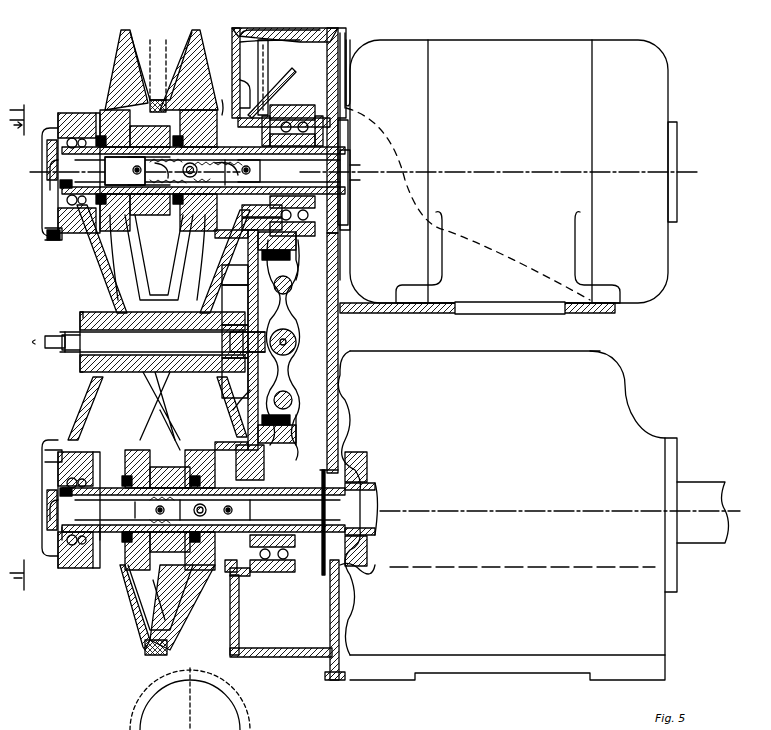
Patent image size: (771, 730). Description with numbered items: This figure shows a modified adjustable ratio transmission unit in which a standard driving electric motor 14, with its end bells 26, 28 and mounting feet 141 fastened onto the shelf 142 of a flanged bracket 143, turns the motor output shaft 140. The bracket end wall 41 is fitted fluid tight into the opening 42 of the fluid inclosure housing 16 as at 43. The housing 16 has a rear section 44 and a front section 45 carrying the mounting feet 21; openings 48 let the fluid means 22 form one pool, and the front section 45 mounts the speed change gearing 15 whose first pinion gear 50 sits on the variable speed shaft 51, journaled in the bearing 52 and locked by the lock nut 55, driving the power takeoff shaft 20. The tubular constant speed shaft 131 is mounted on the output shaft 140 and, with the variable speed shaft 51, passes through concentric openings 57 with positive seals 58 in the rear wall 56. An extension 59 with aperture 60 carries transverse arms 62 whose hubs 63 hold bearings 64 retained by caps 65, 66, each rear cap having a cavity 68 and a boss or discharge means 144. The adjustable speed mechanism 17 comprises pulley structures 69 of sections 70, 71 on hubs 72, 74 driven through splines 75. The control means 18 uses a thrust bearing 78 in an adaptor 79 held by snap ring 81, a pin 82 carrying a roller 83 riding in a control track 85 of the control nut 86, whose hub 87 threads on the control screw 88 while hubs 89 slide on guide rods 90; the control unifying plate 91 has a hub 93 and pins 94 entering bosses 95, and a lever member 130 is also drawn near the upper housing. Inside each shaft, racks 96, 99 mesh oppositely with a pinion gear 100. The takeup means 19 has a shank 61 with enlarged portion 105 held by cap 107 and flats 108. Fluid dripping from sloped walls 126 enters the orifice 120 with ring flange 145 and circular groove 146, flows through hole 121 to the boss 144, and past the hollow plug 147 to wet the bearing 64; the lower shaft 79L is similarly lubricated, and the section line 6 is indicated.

The section line 6- 6 is at (17, 347).
The driving electric motor 14 is at (502, 30).
The speed change gearing 15 is at (380, 458).
The fluid inclosure housing 16 is at (345, 690).
The adjustable speed mechanism 17 is at (160, 27).
The control means 18 is at (275, 590).
The takeup means 19 is at (78, 350).
The power takeoff shaft 20 is at (705, 482).
The mounting feet or base 21 is at (652, 667).
The fluid means 22 is at (450, 570).
The end bell 26 is at (392, 46).
The end bell 28 is at (650, 62).
The end wall 41 is at (327, 78).
The opening 42 is at (285, 40).
The fluid tight fitting 43 is at (342, 26).
The rear section 44 is at (290, 656).
The front section 45 is at (655, 632).
The openings 48 is at (336, 620).
The first pinion gear 50 is at (378, 540).
The variable speed shaft 51 is at (108, 532).
The bearing 52 is at (365, 560).
The lock nut 55 is at (385, 488).
The rear wall 56 is at (232, 57).
The concentric openings 57 is at (315, 580).
The positive seals 58 is at (200, 440).
The extension 59 is at (135, 385).
The aperture 60 is at (185, 365).
The shank 61 is at (162, 342).
The transverse arms 62 is at (84, 285).
The hub 63 is at (75, 113).
The bearing 64 is at (66, 149).
The cap 65 is at (94, 113).
The cap 66 is at (60, 113).
The cavity 68 is at (52, 130).
The pulley structure 69 is at (110, 49).
The pulley section 70 is at (122, 68).
The pulley section 71 is at (190, 62).
The hub 72 is at (114, 135).
The hub 74 is at (172, 122).
The splines 75 is at (304, 455).
The thrust bearing 78 is at (282, 112).
The adaptor 79 is at (312, 112).
The lower shaft 79L is at (203, 510).
The snap ring 81 is at (292, 285).
The pin 82 is at (300, 268).
The roller 83 is at (292, 242).
The control track 85 is at (302, 446).
The control nut 86 is at (290, 350).
The hub 87 is at (288, 332).
The control screw 88 is at (296, 338).
The hubs 89 is at (292, 392).
The guide rod 90 is at (298, 398).
The control unifying plate 91 is at (236, 347).
The hub 93 is at (235, 305).
The pins 94 is at (248, 260).
The bosses 95 is at (235, 331).
The rack 96 is at (255, 168).
The rack 99 is at (130, 182).
The pinion gear 100 is at (196, 169).
The enlarged diameter portion 105 is at (92, 366).
The cap 107 is at (95, 303).
The flat portions 108 is at (93, 316).
The orifice 120 is at (284, 73).
The hole 121 is at (85, 265).
The sloped side walls 126 is at (300, 36).
The lever 130 is at (268, 55).
The constant speed shaft 131 is at (340, 157).
The motor output shaft 140 is at (335, 175).
The mounting feet 141 is at (620, 296).
The shelf 142 is at (400, 303).
The flanged bracket 143 is at (347, 60).
The boss or discharge means 144 is at (46, 165).
The ring flange 145 is at (250, 210).
The circular groove 146 is at (240, 82).
The hollow plug 147 is at (60, 187).